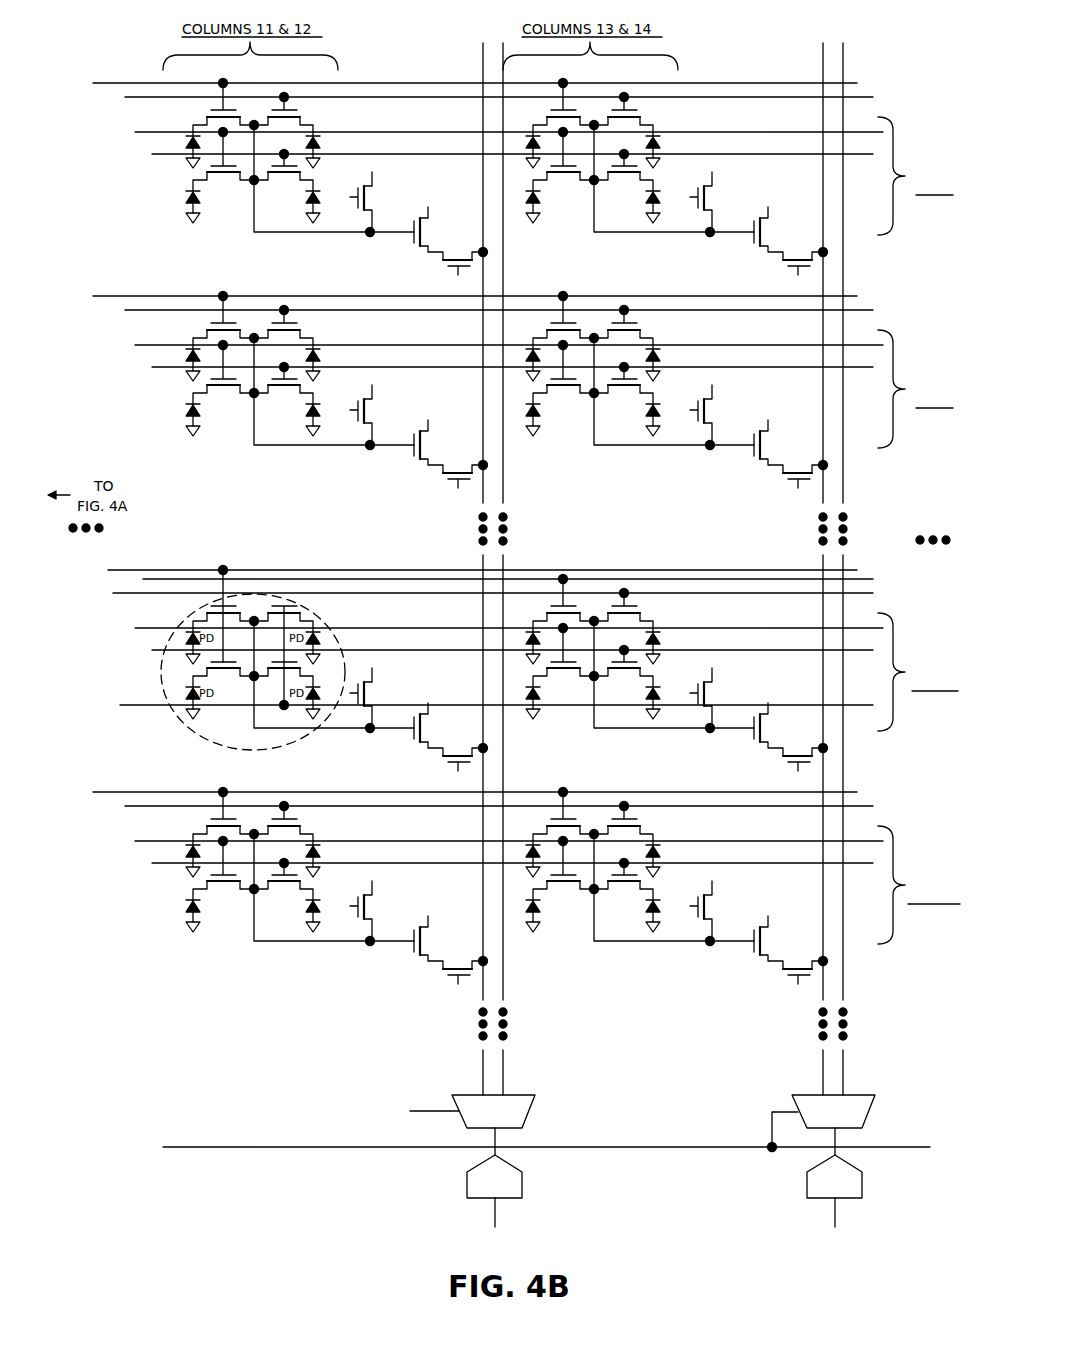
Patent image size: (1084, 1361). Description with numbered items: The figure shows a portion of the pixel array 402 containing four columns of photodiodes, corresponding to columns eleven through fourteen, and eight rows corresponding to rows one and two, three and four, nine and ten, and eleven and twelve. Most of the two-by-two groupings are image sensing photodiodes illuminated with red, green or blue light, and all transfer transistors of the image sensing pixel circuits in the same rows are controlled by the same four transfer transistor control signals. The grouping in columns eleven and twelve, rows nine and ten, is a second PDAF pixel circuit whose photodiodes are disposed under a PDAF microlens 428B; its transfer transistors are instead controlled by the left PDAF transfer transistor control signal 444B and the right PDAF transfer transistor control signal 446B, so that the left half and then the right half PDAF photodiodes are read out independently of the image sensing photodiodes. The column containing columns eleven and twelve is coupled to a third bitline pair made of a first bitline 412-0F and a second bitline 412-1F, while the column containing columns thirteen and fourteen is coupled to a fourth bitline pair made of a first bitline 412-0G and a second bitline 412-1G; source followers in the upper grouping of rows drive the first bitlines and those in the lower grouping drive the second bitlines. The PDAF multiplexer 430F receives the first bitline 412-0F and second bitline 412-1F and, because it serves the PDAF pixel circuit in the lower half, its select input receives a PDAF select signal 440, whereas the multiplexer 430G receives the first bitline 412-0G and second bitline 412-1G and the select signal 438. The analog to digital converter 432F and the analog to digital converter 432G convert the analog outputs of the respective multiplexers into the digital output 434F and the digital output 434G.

The pixel array 402 is at (897, 35).
The PDAF microlens 428B is at (330, 622).
The PDAF transfer transistor control signal TXPD_L 444B is at (56, 586).
The PDAF transfer transistor control signal TXPD_R 446B is at (56, 720).
The first bitline BL0 412-0F is at (481, 1071).
The second bitline BL1 412-1F is at (508, 1072).
The first bitline BL0 412-0G is at (821, 1071).
The second bitline BL1 412-1G is at (848, 1072).
The PDAF multiplexer 430F is at (536, 1104).
The multiplexer 430G is at (876, 1104).
The analog to digital converter 432F is at (527, 1188).
The analog to digital converter 432G is at (867, 1188).
The digital output DOUT 434F is at (527, 1235).
The digital output DOUT 434G is at (867, 1235).
The select signal 438 is at (95, 1143).
The PDAF select signal 440 is at (289, 1111).